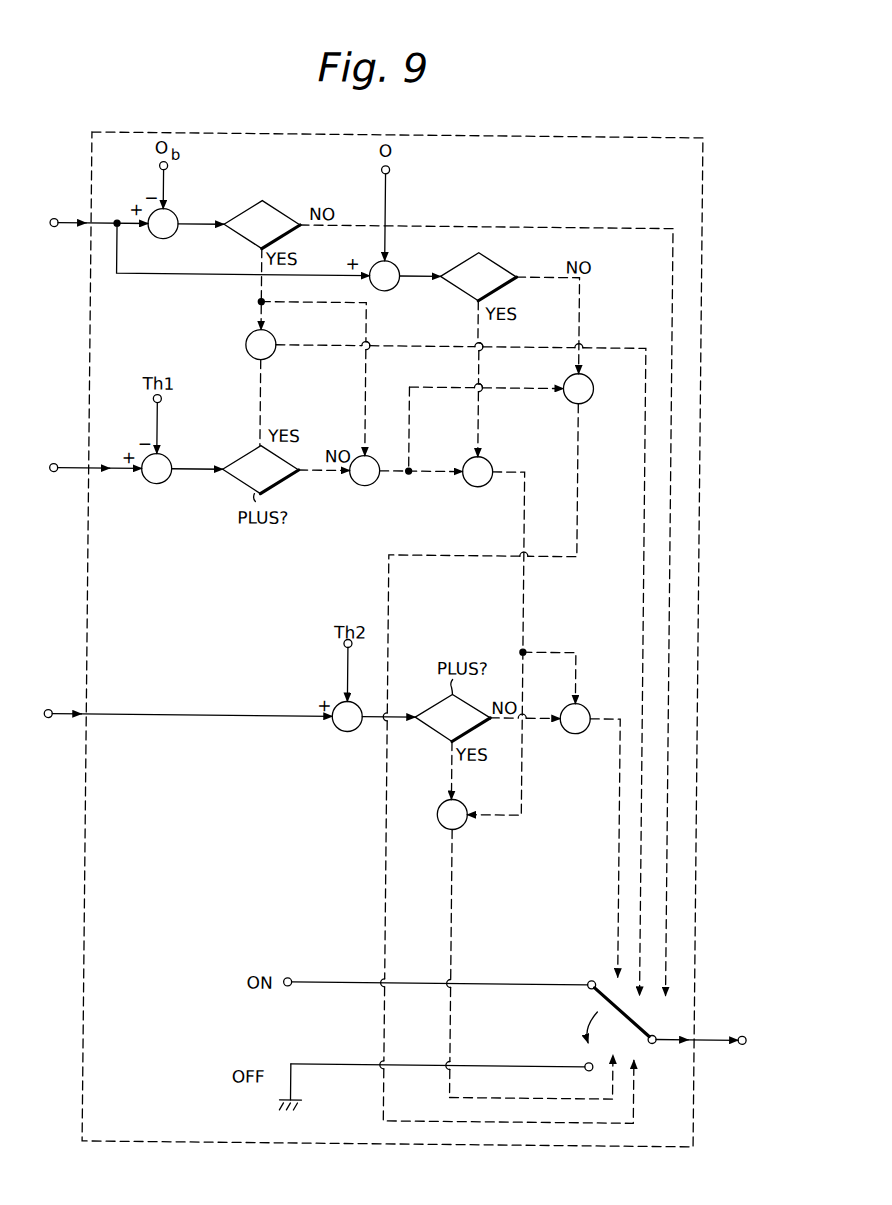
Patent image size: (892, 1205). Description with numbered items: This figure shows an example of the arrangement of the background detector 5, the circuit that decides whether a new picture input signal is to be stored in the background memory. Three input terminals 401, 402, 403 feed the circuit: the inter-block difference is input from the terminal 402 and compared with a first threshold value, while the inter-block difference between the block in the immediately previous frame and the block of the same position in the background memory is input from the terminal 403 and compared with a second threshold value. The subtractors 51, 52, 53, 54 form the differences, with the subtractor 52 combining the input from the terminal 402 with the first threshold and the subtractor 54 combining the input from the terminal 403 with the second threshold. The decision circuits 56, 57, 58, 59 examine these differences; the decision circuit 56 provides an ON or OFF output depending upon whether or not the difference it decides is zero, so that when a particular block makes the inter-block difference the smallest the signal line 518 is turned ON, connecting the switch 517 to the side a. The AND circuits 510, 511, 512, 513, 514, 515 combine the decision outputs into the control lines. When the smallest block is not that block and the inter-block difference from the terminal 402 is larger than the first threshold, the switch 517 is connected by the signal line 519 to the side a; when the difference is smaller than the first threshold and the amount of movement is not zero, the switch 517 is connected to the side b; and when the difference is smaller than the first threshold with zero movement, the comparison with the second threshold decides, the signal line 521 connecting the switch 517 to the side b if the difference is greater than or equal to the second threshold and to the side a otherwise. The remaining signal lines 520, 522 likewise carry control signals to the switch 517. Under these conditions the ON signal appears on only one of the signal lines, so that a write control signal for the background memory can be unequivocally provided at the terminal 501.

The background detector 5 is at (210, 135).
The terminal 401 is at (97, 210).
The terminal 402 is at (94, 456).
The terminal 403 is at (187, 704).
The subtractor 51 is at (172, 216).
The subtractor 52 is at (164, 460).
The subtractor 53 is at (392, 270).
The subtractor 54 is at (348, 733).
The decision circuit 56 is at (280, 209).
The decision circuit 57 is at (498, 277).
The decision circuit 58 is at (241, 456).
The decision circuit 59 is at (430, 729).
The AND circuit 510 is at (271, 348).
The AND circuit 511 is at (363, 487).
The AND circuit 512 is at (476, 487).
The AND circuit 513 is at (588, 404).
The AND circuit 514 is at (576, 733).
The AND circuit 515 is at (464, 826).
The switch 517 is at (636, 1020).
The signal line 518 is at (668, 938).
The signal line 519 is at (643, 910).
The signal line 520 is at (529, 767).
The signal line 521 is at (531, 964).
The signal line 522 is at (621, 879).
The terminal 501 is at (701, 1029).